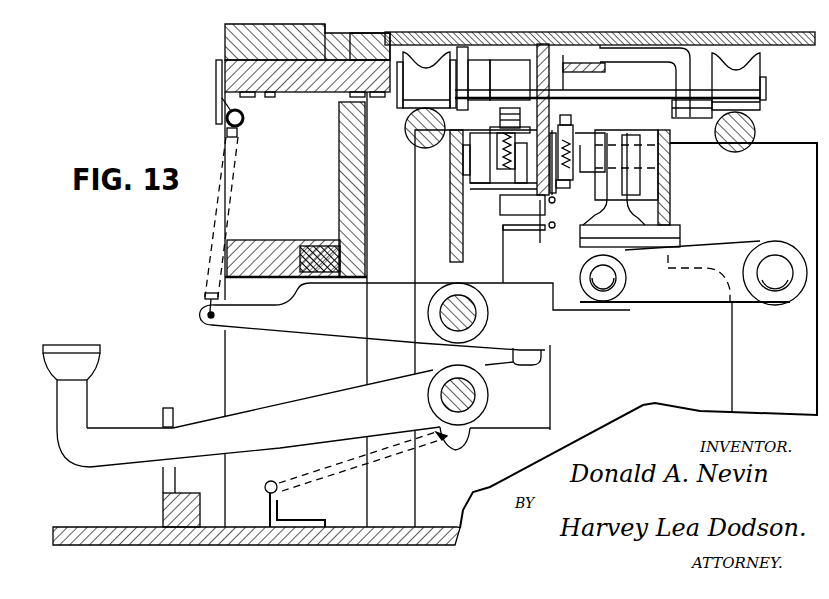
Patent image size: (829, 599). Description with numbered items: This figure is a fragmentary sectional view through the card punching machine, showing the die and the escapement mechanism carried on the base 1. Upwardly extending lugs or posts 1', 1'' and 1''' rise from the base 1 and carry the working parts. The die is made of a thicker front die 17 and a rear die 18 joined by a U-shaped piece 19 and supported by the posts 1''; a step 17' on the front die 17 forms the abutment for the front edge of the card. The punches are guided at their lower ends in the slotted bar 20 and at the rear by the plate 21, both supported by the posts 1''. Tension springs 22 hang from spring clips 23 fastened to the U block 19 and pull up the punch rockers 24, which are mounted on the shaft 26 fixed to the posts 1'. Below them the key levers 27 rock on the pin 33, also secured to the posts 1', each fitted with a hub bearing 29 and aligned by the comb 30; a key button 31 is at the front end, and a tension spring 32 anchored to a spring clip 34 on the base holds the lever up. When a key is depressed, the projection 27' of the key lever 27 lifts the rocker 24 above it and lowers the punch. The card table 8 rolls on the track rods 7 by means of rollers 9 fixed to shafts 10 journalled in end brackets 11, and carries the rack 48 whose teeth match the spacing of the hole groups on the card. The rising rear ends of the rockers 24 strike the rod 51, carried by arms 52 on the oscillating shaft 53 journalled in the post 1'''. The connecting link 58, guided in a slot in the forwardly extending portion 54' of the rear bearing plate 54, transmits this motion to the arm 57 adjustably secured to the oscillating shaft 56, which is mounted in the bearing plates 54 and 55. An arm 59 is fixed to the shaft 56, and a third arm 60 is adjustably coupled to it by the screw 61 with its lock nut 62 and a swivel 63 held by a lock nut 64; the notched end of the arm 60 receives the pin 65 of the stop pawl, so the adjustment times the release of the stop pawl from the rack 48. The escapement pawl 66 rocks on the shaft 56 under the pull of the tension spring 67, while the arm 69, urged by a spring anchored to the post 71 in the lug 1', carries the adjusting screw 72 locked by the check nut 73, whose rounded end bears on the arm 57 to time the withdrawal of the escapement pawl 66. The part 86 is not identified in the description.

The base 1 is at (435, 356).
The lug 1' is at (394, 405).
The post 1'' is at (210, 309).
The post 1''' is at (718, 357).
The track rod 7 is at (406, 132).
The card table 8 is at (716, 33).
The roller 9 is at (404, 100).
The shaft 10 is at (635, 88).
The end bracket 11 is at (660, 52).
The front die 17 is at (286, 41).
The step 17' is at (314, 31).
The rear die 18 is at (388, 34).
The U-shaped piece 19 is at (305, 88).
The slotted bar 20 is at (261, 246).
The plate 21 is at (340, 200).
The tension spring 22 is at (214, 243).
The spring clip 23 is at (216, 95).
The punch rocker 24 is at (316, 332).
The shaft 26 is at (441, 315).
The key lever 27 is at (318, 414).
The projection 27' is at (547, 387).
The hub bearing 29 is at (430, 396).
The comb 30 is at (164, 414).
The key button 31 is at (97, 345).
The tension spring 32 is at (338, 478).
The pin 33 is at (470, 405).
The spring clip 34 is at (268, 508).
The rack 48 is at (543, 44).
The rod 51 is at (590, 279).
The arm 52 is at (702, 300).
The oscillating shaft 53 is at (776, 262).
The bearing plate 54 is at (680, 177).
The forwardly extending portion 54' is at (641, 182).
The bearing plate 55 is at (452, 233).
The oscillating shaft 56 is at (664, 165).
The arm 57 is at (583, 155).
The connecting link 58 is at (588, 262).
The arm 59 is at (465, 185).
The arm 60 is at (522, 186).
The adjustable screw 61 is at (510, 190).
The lock nut 62 is at (500, 197).
The swivel 63 is at (478, 166).
The lock nut 64 is at (480, 152).
The pin 65 is at (526, 95).
The escapement pawl 66 is at (520, 228).
The tension spring 67 is at (512, 215).
The arm 69 is at (560, 165).
The post 71 is at (540, 243).
The adjusting screw 72 is at (618, 135).
The check nut 73 is at (588, 125).
The bracket 86 is at (603, 62).